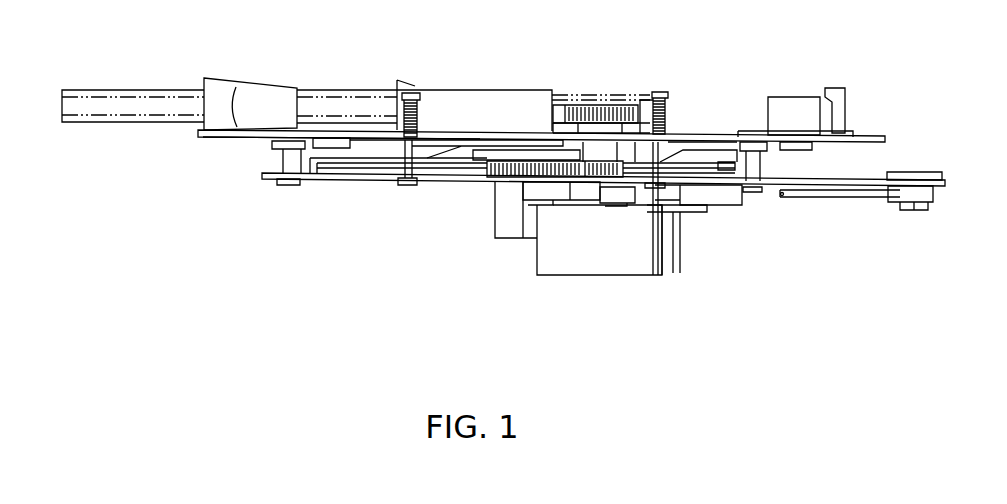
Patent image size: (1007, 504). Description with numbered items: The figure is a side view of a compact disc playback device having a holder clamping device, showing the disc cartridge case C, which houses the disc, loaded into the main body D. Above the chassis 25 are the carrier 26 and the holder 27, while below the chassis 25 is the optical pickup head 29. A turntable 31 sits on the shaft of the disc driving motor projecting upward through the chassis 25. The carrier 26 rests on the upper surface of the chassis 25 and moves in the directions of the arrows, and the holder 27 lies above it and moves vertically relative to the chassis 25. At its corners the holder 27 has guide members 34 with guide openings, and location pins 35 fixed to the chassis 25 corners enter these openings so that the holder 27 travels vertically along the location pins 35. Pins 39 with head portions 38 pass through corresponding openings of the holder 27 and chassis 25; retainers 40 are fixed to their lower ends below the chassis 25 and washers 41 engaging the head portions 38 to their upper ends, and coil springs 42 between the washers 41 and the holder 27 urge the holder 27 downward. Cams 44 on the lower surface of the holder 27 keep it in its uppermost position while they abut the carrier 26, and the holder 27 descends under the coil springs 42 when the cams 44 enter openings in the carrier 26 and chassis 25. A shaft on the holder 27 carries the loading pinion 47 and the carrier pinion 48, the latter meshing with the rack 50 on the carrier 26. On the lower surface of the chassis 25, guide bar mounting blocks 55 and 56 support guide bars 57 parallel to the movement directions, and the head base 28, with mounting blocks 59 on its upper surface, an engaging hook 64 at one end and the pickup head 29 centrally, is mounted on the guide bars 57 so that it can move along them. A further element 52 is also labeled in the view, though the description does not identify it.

The disc cartridge case C is at (146, 88).
The main body D is at (720, 105).
The chassis 25 is at (346, 180).
The carrier 26 is at (392, 173).
The holder 27 is at (260, 130).
The head base 28 is at (676, 218).
The optical pickup head 29 is at (568, 276).
The turntable 31 is at (523, 152).
The guide member 34 is at (277, 149).
The location pin 35 is at (286, 164).
The head portion 38 is at (413, 92).
The pin 39 is at (405, 160).
The retainer 40 is at (413, 184).
The washer 41 is at (398, 112).
The coil spring 42 is at (400, 148).
The cam 44 is at (430, 150).
The loading pinion 47 is at (597, 107).
The carrier pinion 48 is at (592, 180).
The rack 50 is at (507, 182).
The spacer 52 is at (330, 148).
The guide bar mounting block 55 is at (937, 188).
The guide bar mounting block 56 is at (530, 200).
The guide bar 57 is at (875, 194).
The mounting block 59 is at (619, 203).
The engaging hook 64 is at (742, 198).